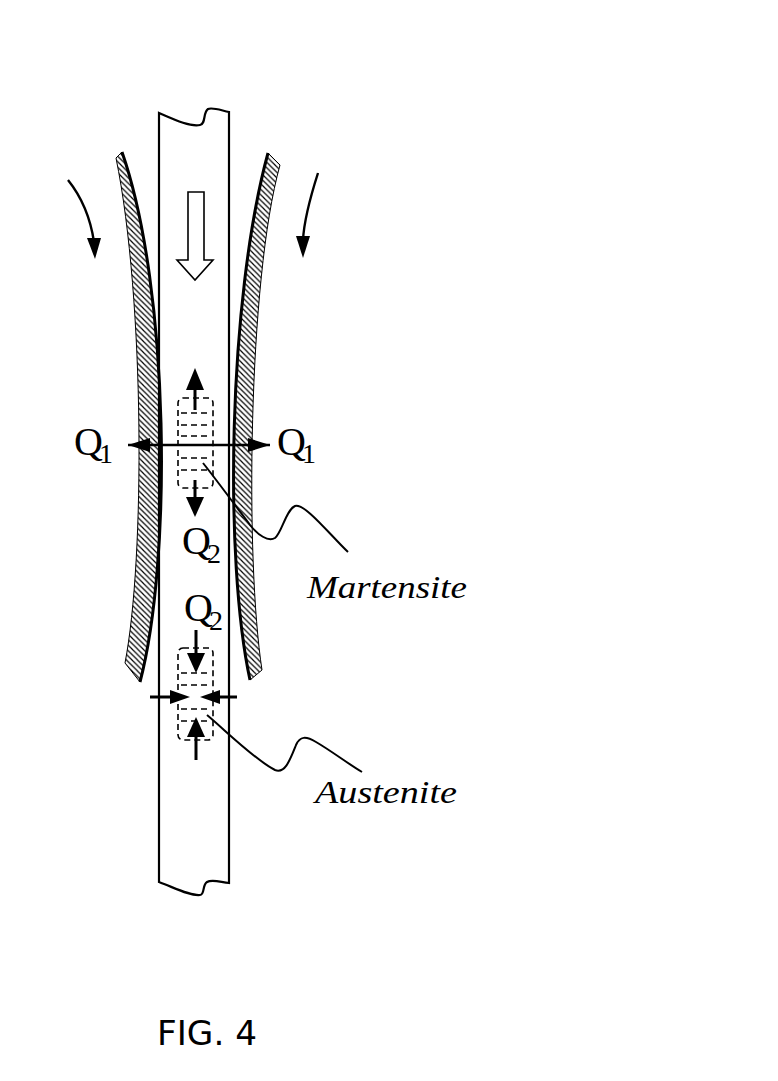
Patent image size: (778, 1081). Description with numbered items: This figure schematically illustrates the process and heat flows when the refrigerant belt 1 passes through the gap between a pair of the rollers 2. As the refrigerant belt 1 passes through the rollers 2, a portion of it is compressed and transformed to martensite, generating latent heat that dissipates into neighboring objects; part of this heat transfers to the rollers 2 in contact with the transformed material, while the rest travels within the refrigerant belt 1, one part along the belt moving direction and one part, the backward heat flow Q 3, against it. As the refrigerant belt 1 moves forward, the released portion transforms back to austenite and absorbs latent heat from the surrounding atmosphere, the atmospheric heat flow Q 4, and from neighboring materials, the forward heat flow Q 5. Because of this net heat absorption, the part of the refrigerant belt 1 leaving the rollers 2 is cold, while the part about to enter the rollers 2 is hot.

The refrigerant belt 1 is at (198, 168).
The rollers 2 is at (245, 368).
The heat flow Q3 (upward heat transfer from martensite region) 3 is at (201, 362).
The heat flow Q4 (lateral heat absorption into austenite region) 4 is at (196, 702).
The heat flow Q5 (upward heat absorption into austenite region) 5 is at (203, 766).